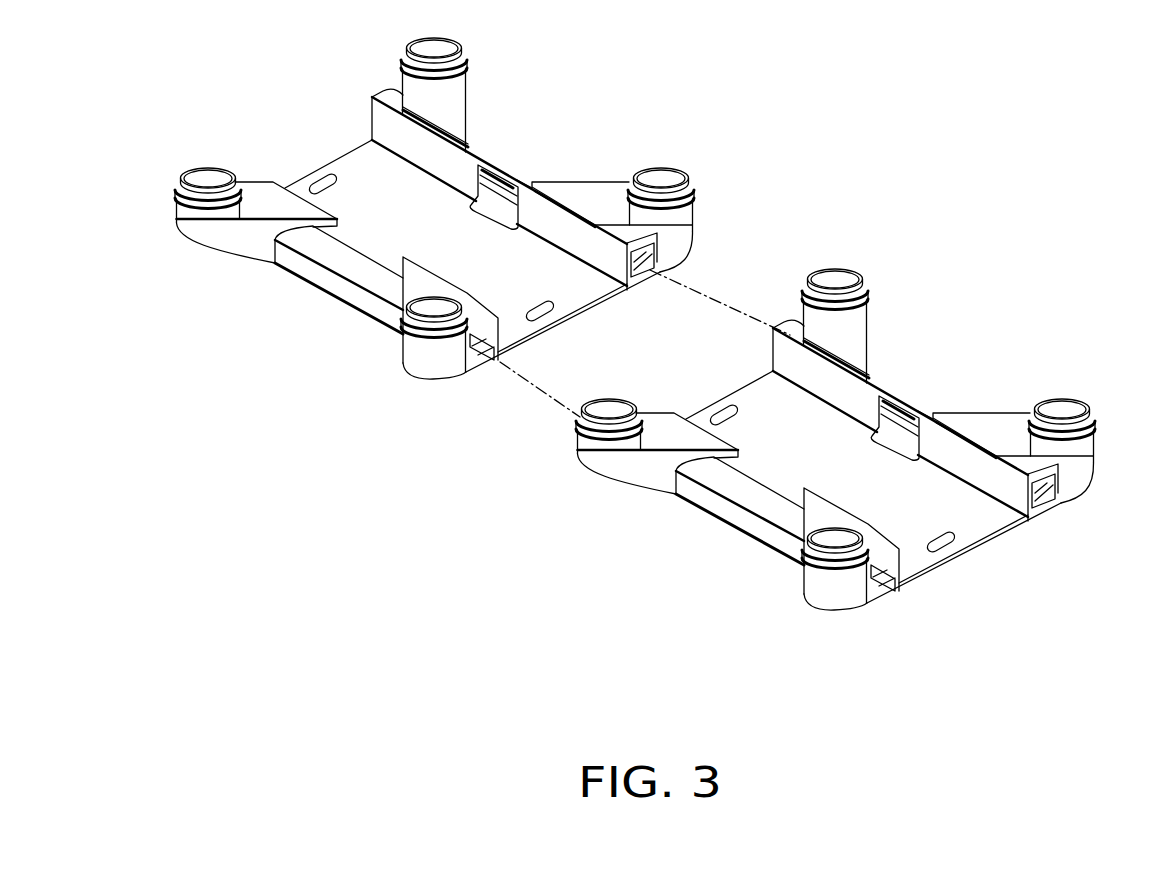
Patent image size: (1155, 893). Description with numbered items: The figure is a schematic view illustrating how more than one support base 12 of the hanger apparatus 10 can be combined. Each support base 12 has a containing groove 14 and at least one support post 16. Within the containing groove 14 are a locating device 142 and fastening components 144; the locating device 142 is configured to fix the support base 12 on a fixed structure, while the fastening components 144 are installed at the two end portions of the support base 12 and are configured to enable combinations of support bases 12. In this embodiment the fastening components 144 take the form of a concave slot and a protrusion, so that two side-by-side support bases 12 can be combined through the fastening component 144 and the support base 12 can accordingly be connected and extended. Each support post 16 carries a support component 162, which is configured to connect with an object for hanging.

The hanger apparatus 10 is at (648, 333).
The support base 12 is at (496, 150).
The containing groove 14 is at (350, 165).
The locating device 142 is at (313, 187).
The fastening component 144 is at (237, 175).
The support post 16 is at (415, 290).
The support component 162 is at (650, 180).